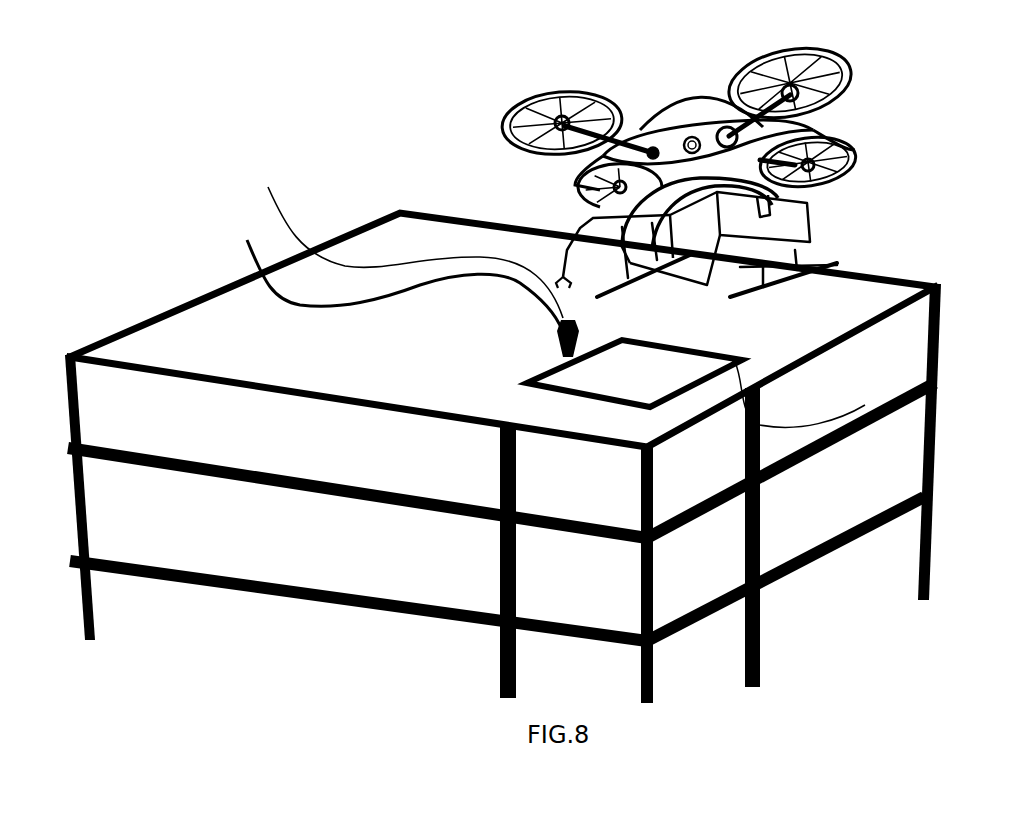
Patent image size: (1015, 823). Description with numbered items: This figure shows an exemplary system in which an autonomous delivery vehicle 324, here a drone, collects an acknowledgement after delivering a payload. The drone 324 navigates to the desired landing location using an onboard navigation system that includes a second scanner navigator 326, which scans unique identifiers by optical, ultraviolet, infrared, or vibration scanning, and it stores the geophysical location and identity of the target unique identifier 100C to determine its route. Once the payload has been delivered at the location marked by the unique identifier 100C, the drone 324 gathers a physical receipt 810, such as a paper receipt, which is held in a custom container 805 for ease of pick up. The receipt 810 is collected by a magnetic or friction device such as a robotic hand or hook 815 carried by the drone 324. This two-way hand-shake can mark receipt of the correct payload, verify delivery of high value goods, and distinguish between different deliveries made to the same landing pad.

The unique identifier 100C is at (936, 402).
The autonomous delivery vehicle 324 is at (695, 100).
The second scanner navigator 326 is at (683, 137).
The custom container 805 is at (403, 286).
The physical receipt 810 is at (405, 241).
The hook 815 is at (580, 232).